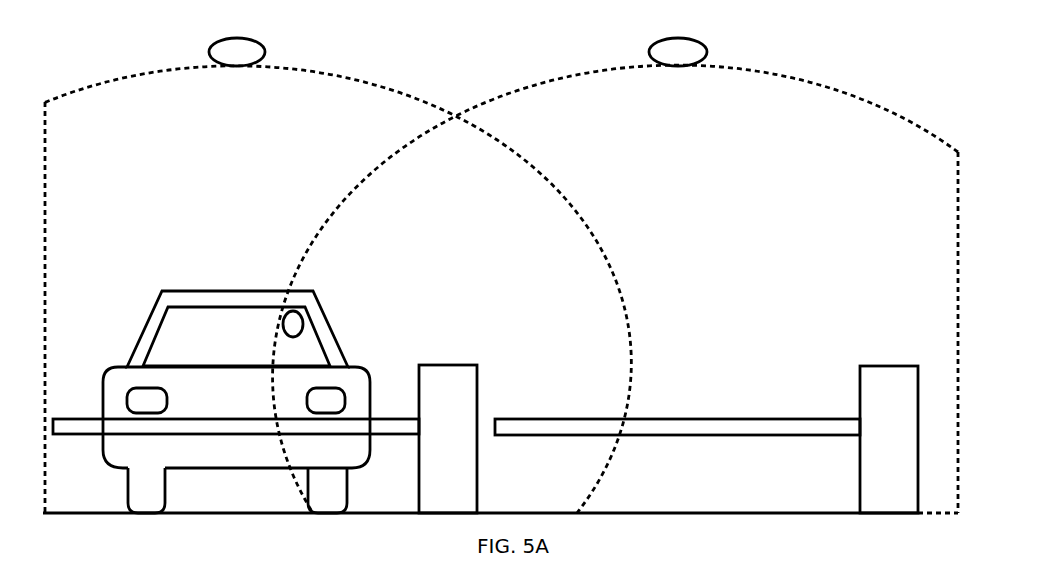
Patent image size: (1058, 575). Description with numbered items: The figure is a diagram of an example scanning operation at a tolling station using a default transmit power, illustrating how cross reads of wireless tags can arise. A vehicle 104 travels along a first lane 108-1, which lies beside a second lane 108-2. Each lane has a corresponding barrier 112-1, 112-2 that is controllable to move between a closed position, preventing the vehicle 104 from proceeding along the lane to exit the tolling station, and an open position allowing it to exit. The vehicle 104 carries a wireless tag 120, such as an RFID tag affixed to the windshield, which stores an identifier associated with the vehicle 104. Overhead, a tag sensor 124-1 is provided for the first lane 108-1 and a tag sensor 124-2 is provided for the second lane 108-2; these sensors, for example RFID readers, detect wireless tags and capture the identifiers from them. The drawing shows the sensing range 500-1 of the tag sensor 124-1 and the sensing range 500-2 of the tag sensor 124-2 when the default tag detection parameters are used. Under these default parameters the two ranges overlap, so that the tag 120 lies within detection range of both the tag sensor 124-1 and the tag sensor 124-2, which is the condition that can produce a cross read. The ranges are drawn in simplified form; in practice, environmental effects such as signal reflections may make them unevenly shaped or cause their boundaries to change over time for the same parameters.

The vehicle 104 is at (160, 289).
The lane 108-1 is at (98, 508).
The lane 108-2 is at (728, 510).
The barrier 112-1 is at (393, 418).
The barrier 112-2 is at (762, 418).
The wireless tag 120 is at (281, 326).
The tag sensor 124-1 is at (209, 52).
The tag sensor 124-2 is at (648, 52).
The sensing range 500-1 is at (323, 72).
The sensing range 500-2 is at (862, 100).